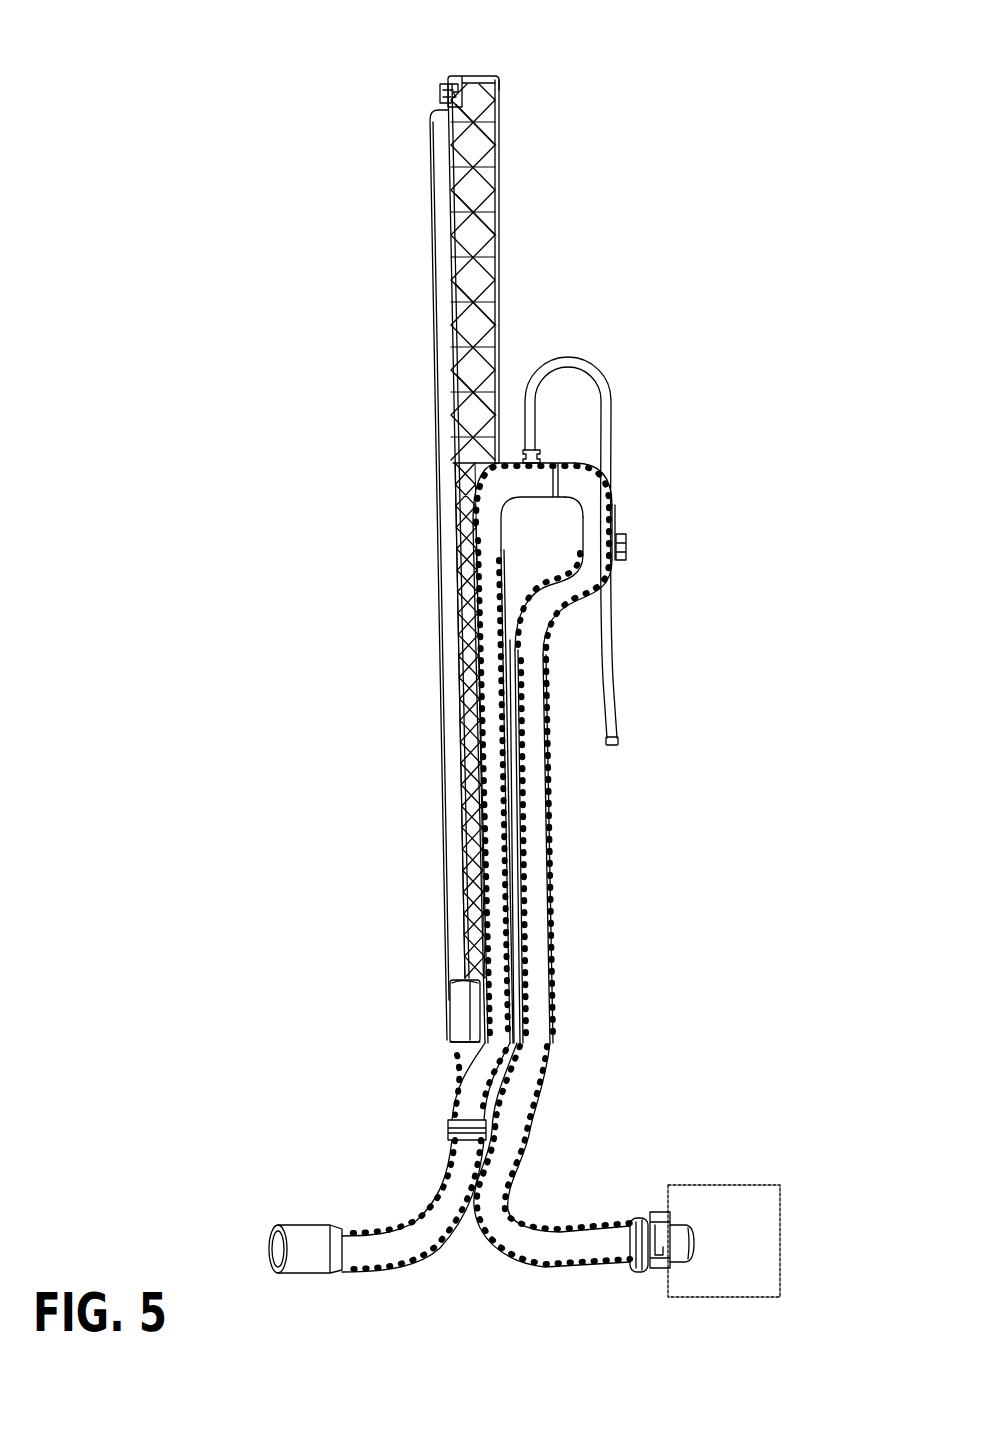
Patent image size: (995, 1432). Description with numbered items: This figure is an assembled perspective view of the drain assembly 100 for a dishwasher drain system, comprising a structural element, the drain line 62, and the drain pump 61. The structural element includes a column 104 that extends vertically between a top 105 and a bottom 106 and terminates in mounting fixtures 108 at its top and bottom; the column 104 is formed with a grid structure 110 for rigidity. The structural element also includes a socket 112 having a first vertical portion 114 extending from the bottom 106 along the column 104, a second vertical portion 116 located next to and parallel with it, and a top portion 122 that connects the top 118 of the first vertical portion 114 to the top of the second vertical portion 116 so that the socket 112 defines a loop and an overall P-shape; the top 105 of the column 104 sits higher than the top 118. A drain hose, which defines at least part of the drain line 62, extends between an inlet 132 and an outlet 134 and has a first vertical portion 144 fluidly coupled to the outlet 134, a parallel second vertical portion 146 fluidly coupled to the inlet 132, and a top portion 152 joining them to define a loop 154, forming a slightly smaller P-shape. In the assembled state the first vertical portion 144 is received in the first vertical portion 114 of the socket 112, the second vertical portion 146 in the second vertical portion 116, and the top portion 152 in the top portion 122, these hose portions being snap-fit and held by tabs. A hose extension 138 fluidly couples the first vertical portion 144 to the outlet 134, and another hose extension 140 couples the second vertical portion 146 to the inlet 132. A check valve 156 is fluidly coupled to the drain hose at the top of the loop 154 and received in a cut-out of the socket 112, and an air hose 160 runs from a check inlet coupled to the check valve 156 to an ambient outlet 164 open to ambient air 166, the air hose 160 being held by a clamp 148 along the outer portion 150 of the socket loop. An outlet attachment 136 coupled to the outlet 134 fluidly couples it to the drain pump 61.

The drain assembly 100 is at (150, 24).
The column 104 is at (447, 540).
The top 105 is at (478, 78).
The bottom 106 is at (462, 1043).
The mounting fixtures 108 is at (447, 94).
The grid structure 110 is at (452, 250).
The socket 112 is at (516, 220).
The first vertical portion 114 is at (509, 980).
The second vertical portion 116 is at (550, 853).
The top 118 is at (503, 470).
The top portion 122 is at (618, 516).
The inlet 132 is at (700, 1252).
The outlet 134 is at (270, 1246).
The outlet attachment 136 is at (672, 1228).
The hose extension 138 is at (412, 1232).
The hose extension 140 is at (535, 1126).
The first vertical portion 144 is at (487, 856).
The second vertical portion 146 is at (524, 906).
The clamp 148 is at (627, 548).
The outer portion 150 is at (615, 578).
The top portion 152 is at (583, 588).
The loop 154 is at (598, 488).
The check valve 156 is at (522, 452).
The air hose 160 is at (607, 452).
The ambient outlet 164 is at (616, 746).
The ambient air 166 is at (623, 790).
The drain pump 61 is at (742, 1222).
The drain line 62 is at (489, 811).